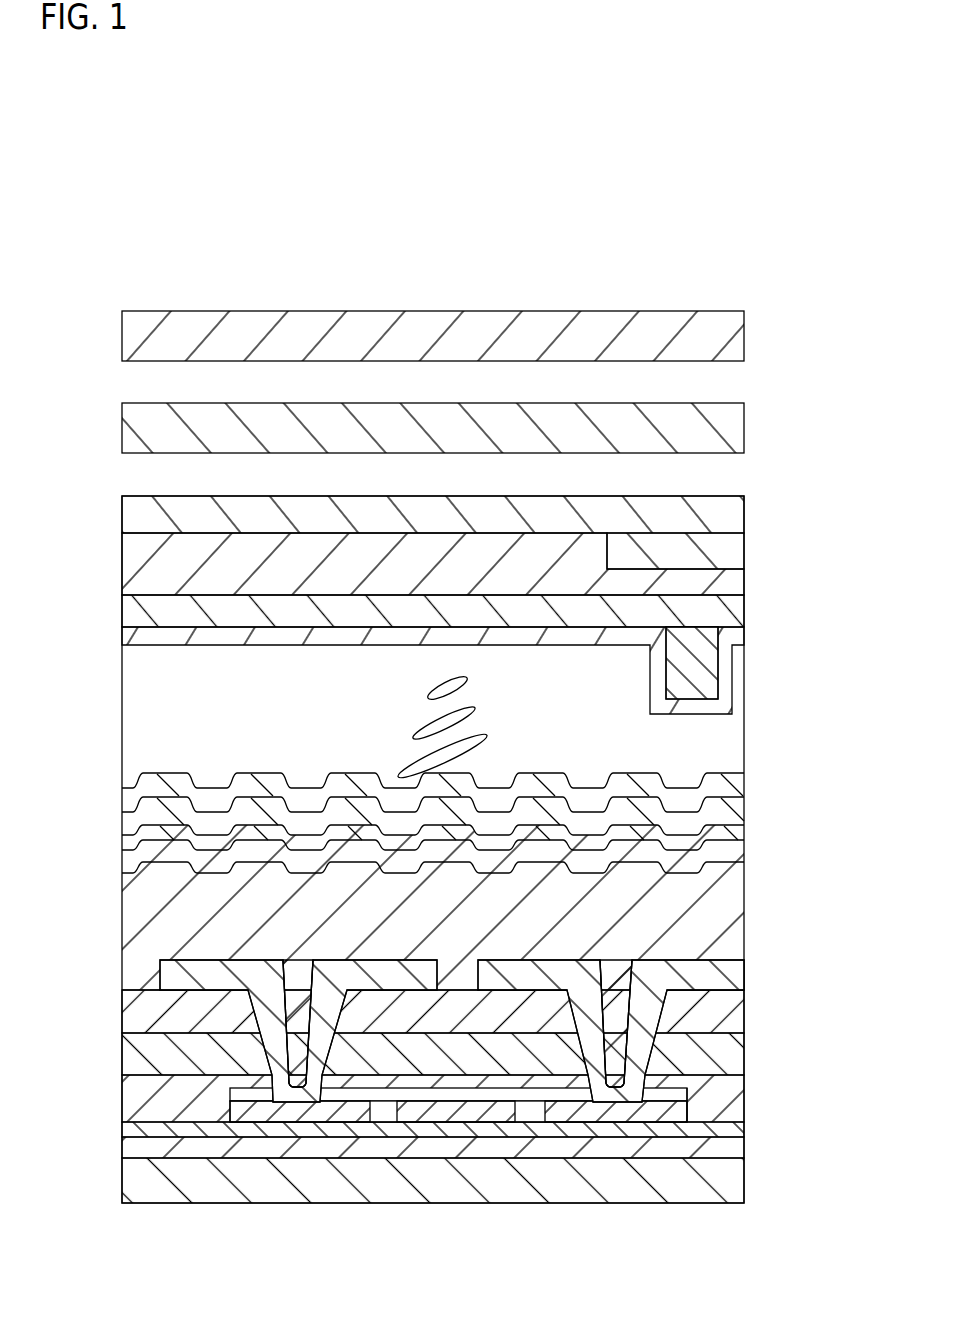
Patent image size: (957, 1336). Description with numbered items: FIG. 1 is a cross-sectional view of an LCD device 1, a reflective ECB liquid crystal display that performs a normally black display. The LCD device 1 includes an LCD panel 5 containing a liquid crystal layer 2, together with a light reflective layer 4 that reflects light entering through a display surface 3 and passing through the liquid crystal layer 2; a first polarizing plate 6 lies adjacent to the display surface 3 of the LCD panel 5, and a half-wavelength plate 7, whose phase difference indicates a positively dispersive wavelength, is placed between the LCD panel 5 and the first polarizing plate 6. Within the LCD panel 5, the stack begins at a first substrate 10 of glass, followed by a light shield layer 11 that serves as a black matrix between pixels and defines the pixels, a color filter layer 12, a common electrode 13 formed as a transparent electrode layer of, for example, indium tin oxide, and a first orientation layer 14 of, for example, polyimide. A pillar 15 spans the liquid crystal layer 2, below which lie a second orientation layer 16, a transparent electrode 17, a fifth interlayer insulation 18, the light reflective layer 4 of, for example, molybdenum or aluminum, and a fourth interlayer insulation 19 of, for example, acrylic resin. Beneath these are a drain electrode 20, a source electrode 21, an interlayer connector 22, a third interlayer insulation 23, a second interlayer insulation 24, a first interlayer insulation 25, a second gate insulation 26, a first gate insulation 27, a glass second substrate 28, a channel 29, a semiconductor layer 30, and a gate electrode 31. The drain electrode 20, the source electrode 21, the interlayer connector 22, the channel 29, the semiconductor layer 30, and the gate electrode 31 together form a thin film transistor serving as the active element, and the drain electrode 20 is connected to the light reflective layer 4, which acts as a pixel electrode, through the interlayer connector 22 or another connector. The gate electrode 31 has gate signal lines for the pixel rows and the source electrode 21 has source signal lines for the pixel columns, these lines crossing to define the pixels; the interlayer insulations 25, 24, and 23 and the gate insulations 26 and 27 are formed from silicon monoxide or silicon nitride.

The LCD device 1 is at (683, 176).
The liquid crystal layer 2 is at (155, 713).
The display surface 3 is at (466, 305).
The light reflective layer 4 is at (708, 852).
The LCD panel 5 is at (471, 878).
The first polarizing plate 6 is at (706, 341).
The half-wavelength plate 7 is at (713, 429).
The first substrate 10 is at (705, 513).
The light shield layer 11 is at (705, 548).
The color filter layer 12 is at (705, 579).
The common electrode 13 is at (705, 609).
The first orientation layer 14 is at (732, 636).
The pillar 15 is at (700, 680).
The second orientation layer 16 is at (715, 778).
The transparent electrode 17 is at (715, 802).
The fifth interlayer insulation 18 is at (712, 830).
The fourth interlayer insulation 19 is at (712, 906).
The drain electrode 20 is at (712, 972).
The source electrode 21 is at (175, 972).
The interlayer connector 22 is at (270, 1048).
The third interlayer insulation 23 is at (712, 1010).
The second interlayer insulation 24 is at (712, 1052).
The first interlayer insulation 25 is at (712, 1087).
The second gate insulation 26 is at (712, 1118).
The first gate insulation 27 is at (712, 1153).
The second substrate 28 is at (467, 1184).
The channel 29 is at (444, 1108).
The semiconductor layer 30 is at (300, 1105).
The gate electrode 31 is at (484, 1146).